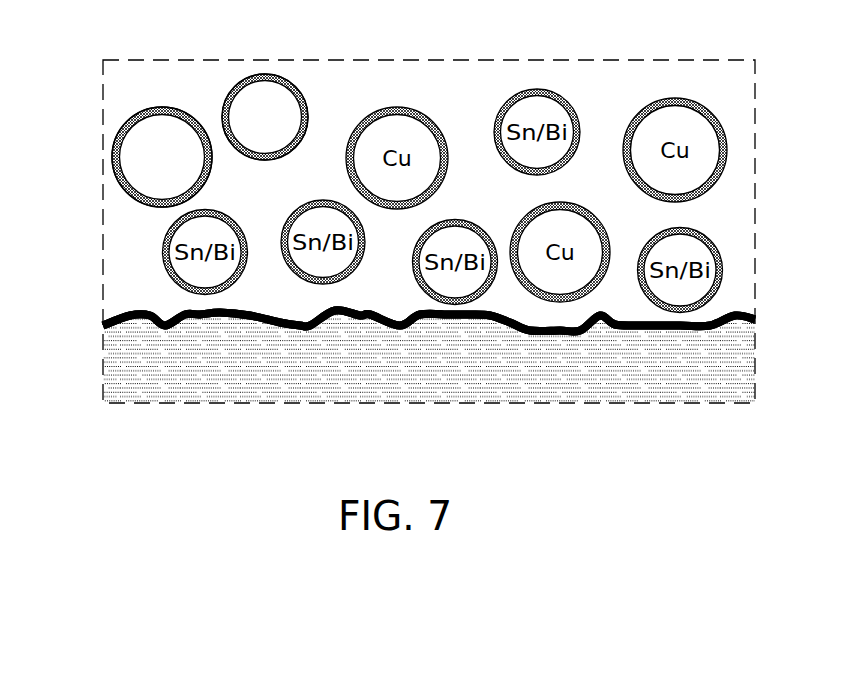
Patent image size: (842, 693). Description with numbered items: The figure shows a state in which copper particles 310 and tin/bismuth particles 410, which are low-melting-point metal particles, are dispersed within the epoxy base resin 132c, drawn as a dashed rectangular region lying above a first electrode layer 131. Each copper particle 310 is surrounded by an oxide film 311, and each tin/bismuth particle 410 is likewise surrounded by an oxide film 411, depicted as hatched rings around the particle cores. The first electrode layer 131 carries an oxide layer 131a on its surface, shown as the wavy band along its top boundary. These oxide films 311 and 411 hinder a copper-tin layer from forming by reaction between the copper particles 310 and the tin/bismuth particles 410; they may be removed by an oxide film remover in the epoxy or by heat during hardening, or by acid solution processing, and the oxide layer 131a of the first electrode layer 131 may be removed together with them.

The first electrode layer 131 is at (182, 377).
The oxide layer 131a is at (135, 311).
The base resin 132c is at (619, 88).
The copper particles 310 is at (142, 135).
The oxide film 311 is at (122, 190).
The tin/bismuth particles 410 is at (262, 95).
The oxide film 411 is at (230, 92).